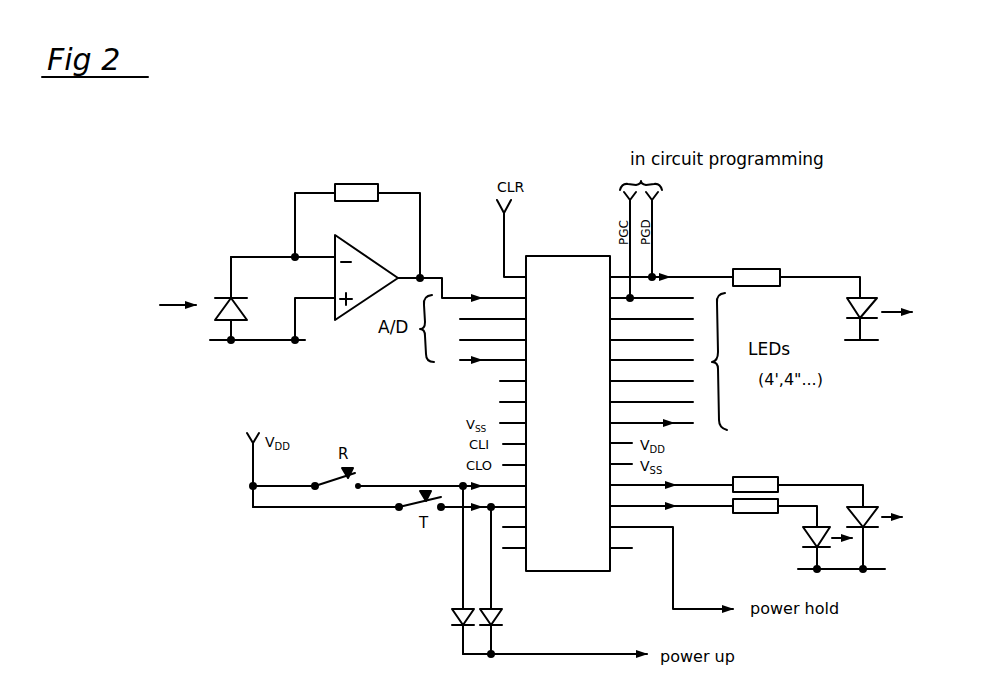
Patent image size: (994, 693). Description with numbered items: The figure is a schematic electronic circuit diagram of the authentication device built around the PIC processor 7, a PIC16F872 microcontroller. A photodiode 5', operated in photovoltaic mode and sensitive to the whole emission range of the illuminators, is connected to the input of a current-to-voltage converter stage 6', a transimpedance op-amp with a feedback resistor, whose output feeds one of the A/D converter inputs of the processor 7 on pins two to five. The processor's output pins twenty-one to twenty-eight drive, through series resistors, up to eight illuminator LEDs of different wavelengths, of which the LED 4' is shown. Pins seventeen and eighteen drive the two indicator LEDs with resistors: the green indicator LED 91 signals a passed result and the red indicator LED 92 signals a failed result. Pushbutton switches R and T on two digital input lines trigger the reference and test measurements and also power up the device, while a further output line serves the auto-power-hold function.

The photodiode 5' is at (247, 306).
The current-to-voltage converter/amplifier stage 6' is at (378, 262).
The PIC processor 7 is at (564, 280).
The illuminator LED 4' is at (761, 311).
The green indicator LED 91 is at (764, 529).
The red indicator LED 92 is at (731, 535).